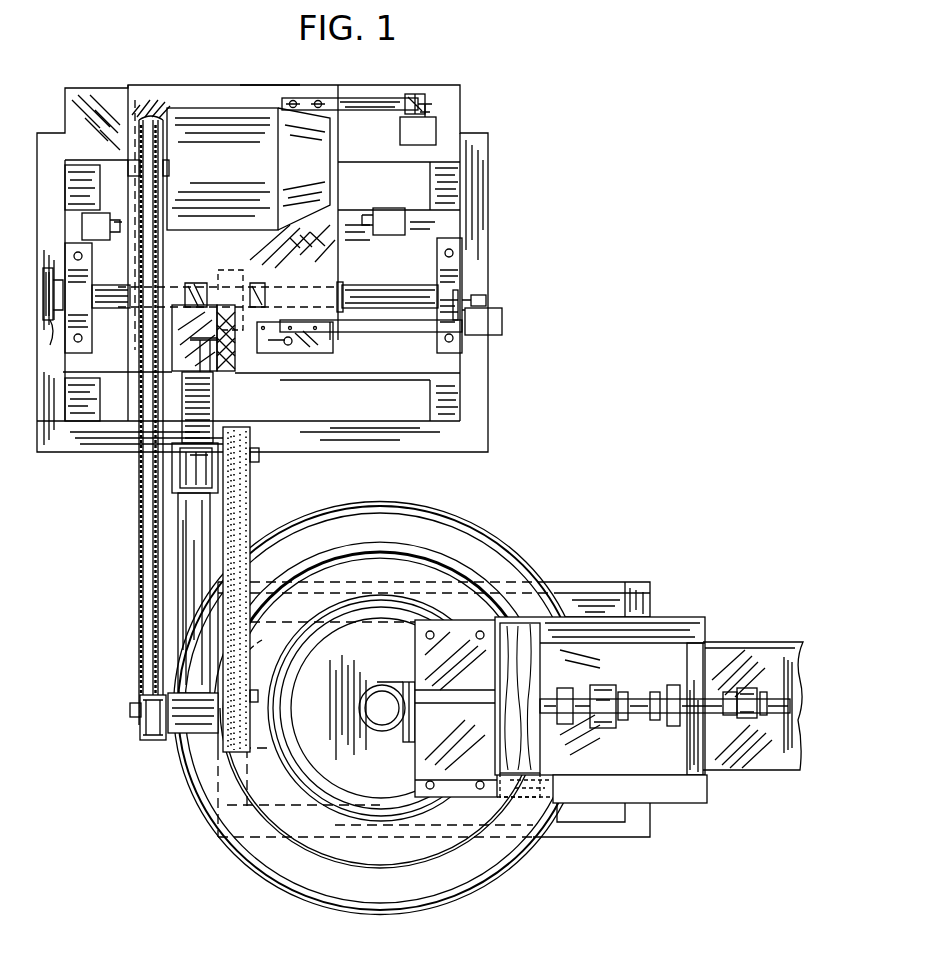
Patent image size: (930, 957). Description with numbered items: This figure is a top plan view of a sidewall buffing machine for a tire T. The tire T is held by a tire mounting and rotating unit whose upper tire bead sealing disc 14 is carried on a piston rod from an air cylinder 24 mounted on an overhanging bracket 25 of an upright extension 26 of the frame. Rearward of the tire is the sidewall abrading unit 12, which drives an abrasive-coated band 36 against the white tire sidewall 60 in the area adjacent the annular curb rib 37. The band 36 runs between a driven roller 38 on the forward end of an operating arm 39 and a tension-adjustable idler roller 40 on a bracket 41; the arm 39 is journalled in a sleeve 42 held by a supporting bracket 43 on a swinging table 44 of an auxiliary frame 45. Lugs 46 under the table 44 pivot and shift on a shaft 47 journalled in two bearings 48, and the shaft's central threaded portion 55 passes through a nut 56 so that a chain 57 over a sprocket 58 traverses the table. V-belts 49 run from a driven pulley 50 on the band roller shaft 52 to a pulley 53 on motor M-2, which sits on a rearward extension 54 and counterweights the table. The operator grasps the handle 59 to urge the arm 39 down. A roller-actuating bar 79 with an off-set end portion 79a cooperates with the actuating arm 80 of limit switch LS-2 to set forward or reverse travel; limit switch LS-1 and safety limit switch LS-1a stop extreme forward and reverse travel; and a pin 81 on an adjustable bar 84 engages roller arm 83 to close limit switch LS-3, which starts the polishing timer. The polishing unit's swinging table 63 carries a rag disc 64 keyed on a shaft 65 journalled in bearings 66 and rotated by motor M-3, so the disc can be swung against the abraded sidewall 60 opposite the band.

The sidewall abrading unit 12 is at (170, 466).
The upper tire bead sealing disc 14 is at (340, 806).
The air cylinder 24 is at (378, 685).
The overhanging bracket 25 is at (408, 682).
The upright extension 26 is at (673, 788).
The abrasive-coated band 36 is at (235, 503).
The annular curb rib 37 is at (350, 873).
The driven roller 38 is at (387, 709).
The operating arm 39 is at (178, 522).
The tension-adjustable idler roller 40 is at (258, 479).
The bracket 41 is at (205, 400).
The sleeve 42 is at (235, 372).
The supporting bracket 43 is at (180, 308).
The swinging table 44 is at (205, 85).
The auxiliary frame 45 is at (462, 190).
The lugs 46 is at (136, 222).
The shaft 47 is at (405, 288).
The bearings 48 is at (455, 268).
The V-belts 49 is at (142, 586).
The driven pulley 50 is at (143, 735).
The band roller shaft 52 is at (132, 712).
The pulley 53 is at (136, 118).
The rearward extension 54 is at (265, 86).
The central threaded portion 55 is at (330, 270).
The nut 56 is at (225, 272).
The chain 57 is at (58, 265).
The sprocket 58 is at (52, 322).
The handle 59 is at (196, 738).
The tire sidewall 60 is at (440, 848).
The swinging table 63 is at (766, 757).
The rag disc 64 is at (545, 684).
The shaft 65 is at (642, 720).
The bearings 66 is at (670, 684).
The roller-actuating bar 79 is at (382, 100).
The off-set end portion 79a is at (412, 98).
The actuating arm 80 is at (430, 108).
The pin 81 is at (458, 292).
The roller arm 83 is at (487, 300).
The adjustable bar 84 is at (383, 332).
The limit switch LS-1 is at (392, 215).
The safety limit switch LS-1a is at (93, 222).
The limit switch LS-2 is at (425, 133).
The limit switch LS-3 is at (503, 318).
The motor M-2 is at (298, 128).
The motor M-3 is at (793, 643).
The tire T is at (532, 850).